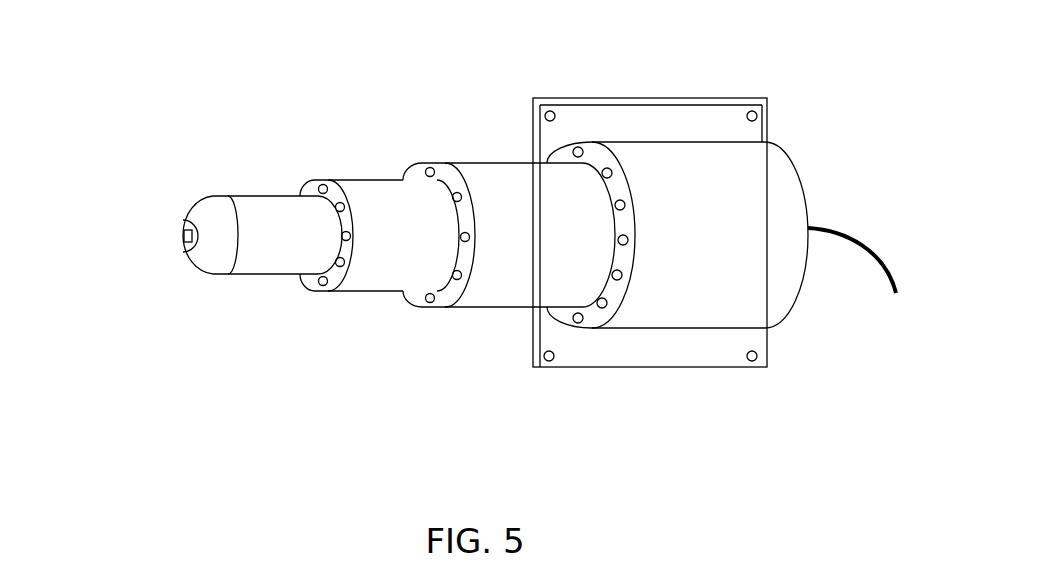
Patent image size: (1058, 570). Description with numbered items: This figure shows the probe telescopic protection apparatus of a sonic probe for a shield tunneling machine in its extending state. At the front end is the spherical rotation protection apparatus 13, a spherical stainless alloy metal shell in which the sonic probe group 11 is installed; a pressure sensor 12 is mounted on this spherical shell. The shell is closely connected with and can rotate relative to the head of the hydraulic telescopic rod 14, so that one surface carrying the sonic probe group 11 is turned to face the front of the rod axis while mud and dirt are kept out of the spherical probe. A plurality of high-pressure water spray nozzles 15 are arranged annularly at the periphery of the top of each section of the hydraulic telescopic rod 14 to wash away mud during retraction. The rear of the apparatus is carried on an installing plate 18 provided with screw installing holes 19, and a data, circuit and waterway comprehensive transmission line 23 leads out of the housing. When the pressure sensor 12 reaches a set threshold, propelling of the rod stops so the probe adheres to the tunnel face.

The sonic probe group 11 is at (185, 233).
The pressure sensor 12 is at (190, 238).
The spherical rotation protection apparatus 13 is at (212, 265).
The hydraulic telescopic rod 14 is at (502, 187).
The high-pressure water spray nozzle 15 is at (318, 173).
The installing plate 18 is at (674, 112).
The screw installing hole 19 is at (762, 95).
The data, circuit and waterway comprehensive transmission line 23 is at (857, 230).